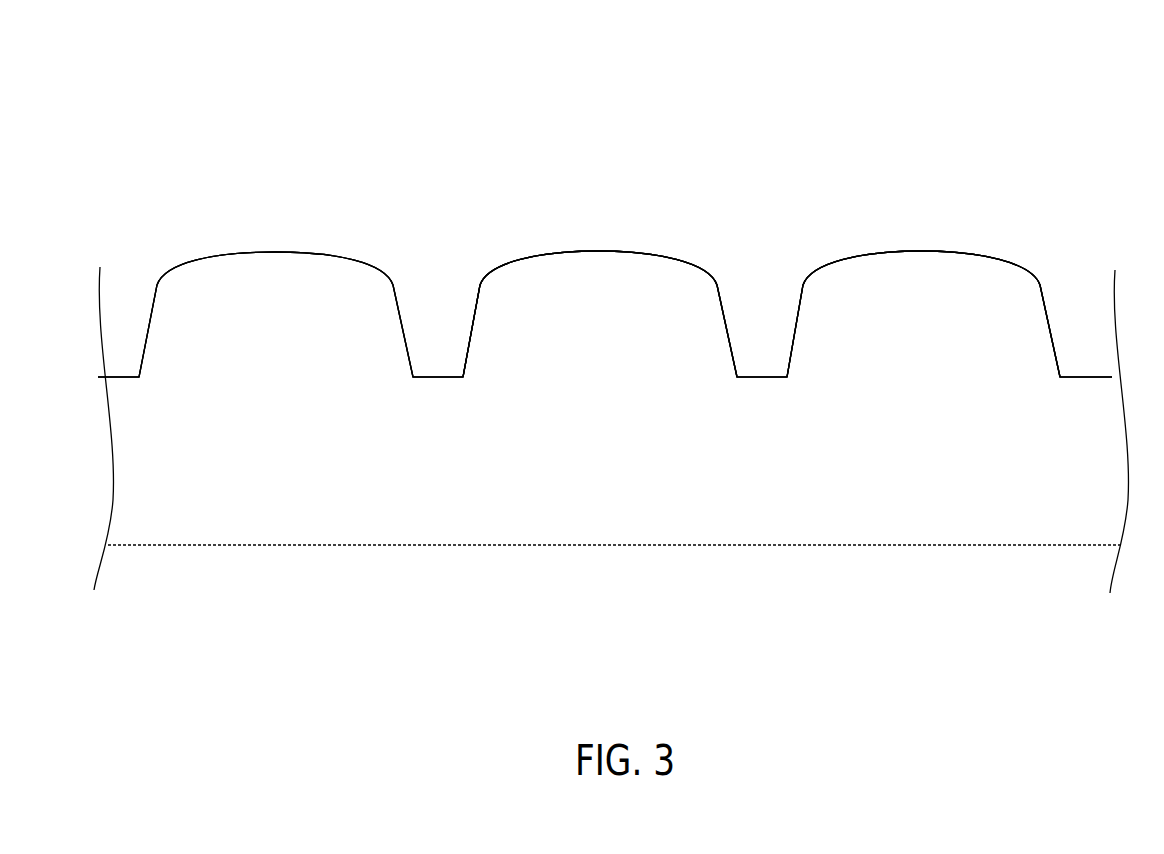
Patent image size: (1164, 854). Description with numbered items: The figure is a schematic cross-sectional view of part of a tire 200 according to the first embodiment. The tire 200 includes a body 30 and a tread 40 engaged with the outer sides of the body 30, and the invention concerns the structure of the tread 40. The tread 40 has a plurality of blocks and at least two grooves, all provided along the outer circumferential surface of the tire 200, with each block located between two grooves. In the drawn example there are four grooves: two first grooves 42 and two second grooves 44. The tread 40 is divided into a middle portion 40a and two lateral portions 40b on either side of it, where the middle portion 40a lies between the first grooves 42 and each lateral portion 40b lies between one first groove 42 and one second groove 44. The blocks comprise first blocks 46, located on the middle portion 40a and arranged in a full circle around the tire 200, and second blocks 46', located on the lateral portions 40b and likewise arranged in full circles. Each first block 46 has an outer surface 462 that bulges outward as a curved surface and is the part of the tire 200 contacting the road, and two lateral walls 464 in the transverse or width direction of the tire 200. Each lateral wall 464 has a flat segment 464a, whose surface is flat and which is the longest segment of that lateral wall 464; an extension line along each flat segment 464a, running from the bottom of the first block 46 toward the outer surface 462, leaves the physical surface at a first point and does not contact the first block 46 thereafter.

The tire 200 is at (1157, 47).
The body 30 is at (958, 490).
The tread 40 is at (989, 290).
The middle portion 40a is at (604, 200).
The lateral portions 40b is at (278, 230).
The first grooves 42 is at (422, 342).
The second grooves 44 is at (115, 355).
The first blocks 46 is at (598, 209).
The second blocks 46' is at (597, 198).
The outer surface 462 is at (558, 252).
The lateral walls 464 is at (473, 290).
The flat segment 464a is at (466, 340).